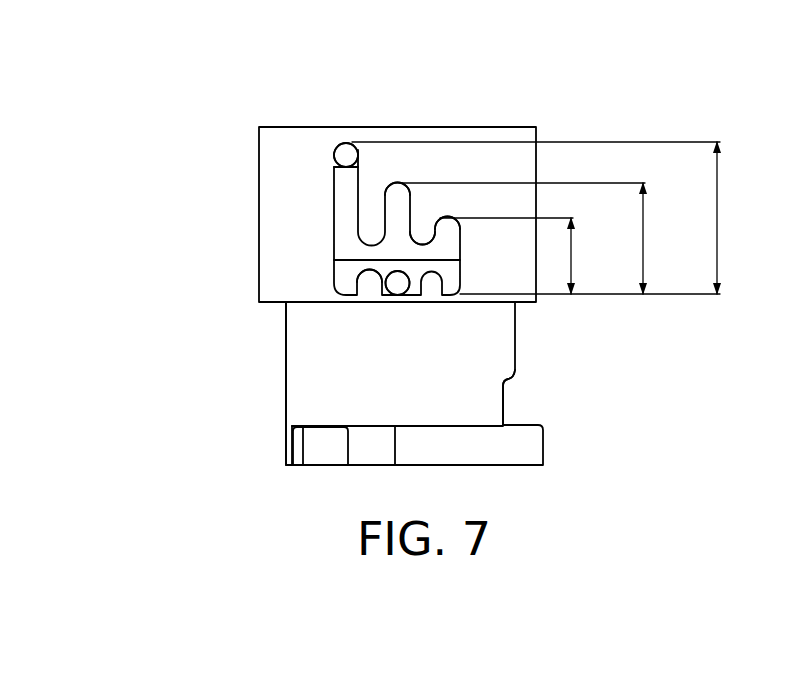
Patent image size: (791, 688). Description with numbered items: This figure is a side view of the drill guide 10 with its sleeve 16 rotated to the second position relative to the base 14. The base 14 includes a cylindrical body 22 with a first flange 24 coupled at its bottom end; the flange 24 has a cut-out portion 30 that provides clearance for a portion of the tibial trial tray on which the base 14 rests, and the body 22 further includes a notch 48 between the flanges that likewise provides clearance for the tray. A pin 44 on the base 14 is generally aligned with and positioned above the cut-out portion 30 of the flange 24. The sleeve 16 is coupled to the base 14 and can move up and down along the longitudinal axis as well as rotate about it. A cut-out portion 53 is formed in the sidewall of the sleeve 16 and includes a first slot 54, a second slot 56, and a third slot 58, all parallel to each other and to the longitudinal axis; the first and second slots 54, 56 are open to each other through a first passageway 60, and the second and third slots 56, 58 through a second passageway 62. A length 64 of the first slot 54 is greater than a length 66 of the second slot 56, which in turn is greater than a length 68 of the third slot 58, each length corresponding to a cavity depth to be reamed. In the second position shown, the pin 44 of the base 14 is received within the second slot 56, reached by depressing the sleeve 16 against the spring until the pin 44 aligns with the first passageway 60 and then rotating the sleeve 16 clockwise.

The drill guide 10 is at (218, 95).
The base 14 is at (283, 415).
The sleeve 16 is at (500, 127).
The cylindrical body 22 is at (300, 352).
The first flange 24 is at (535, 445).
The cut-out portion 30 is at (348, 440).
The pin 44 is at (397, 287).
The notch 48 is at (515, 377).
The cut-out portion 53 is at (332, 193).
The first slot 54 is at (337, 163).
The second slot 56 is at (385, 195).
The third slot 58 is at (430, 225).
The first passageway 60 is at (374, 268).
The second passageway 62 is at (428, 246).
The length of the first slot 64 is at (717, 220).
The length of the second slot 66 is at (643, 242).
The length of the third slot 68 is at (572, 258).